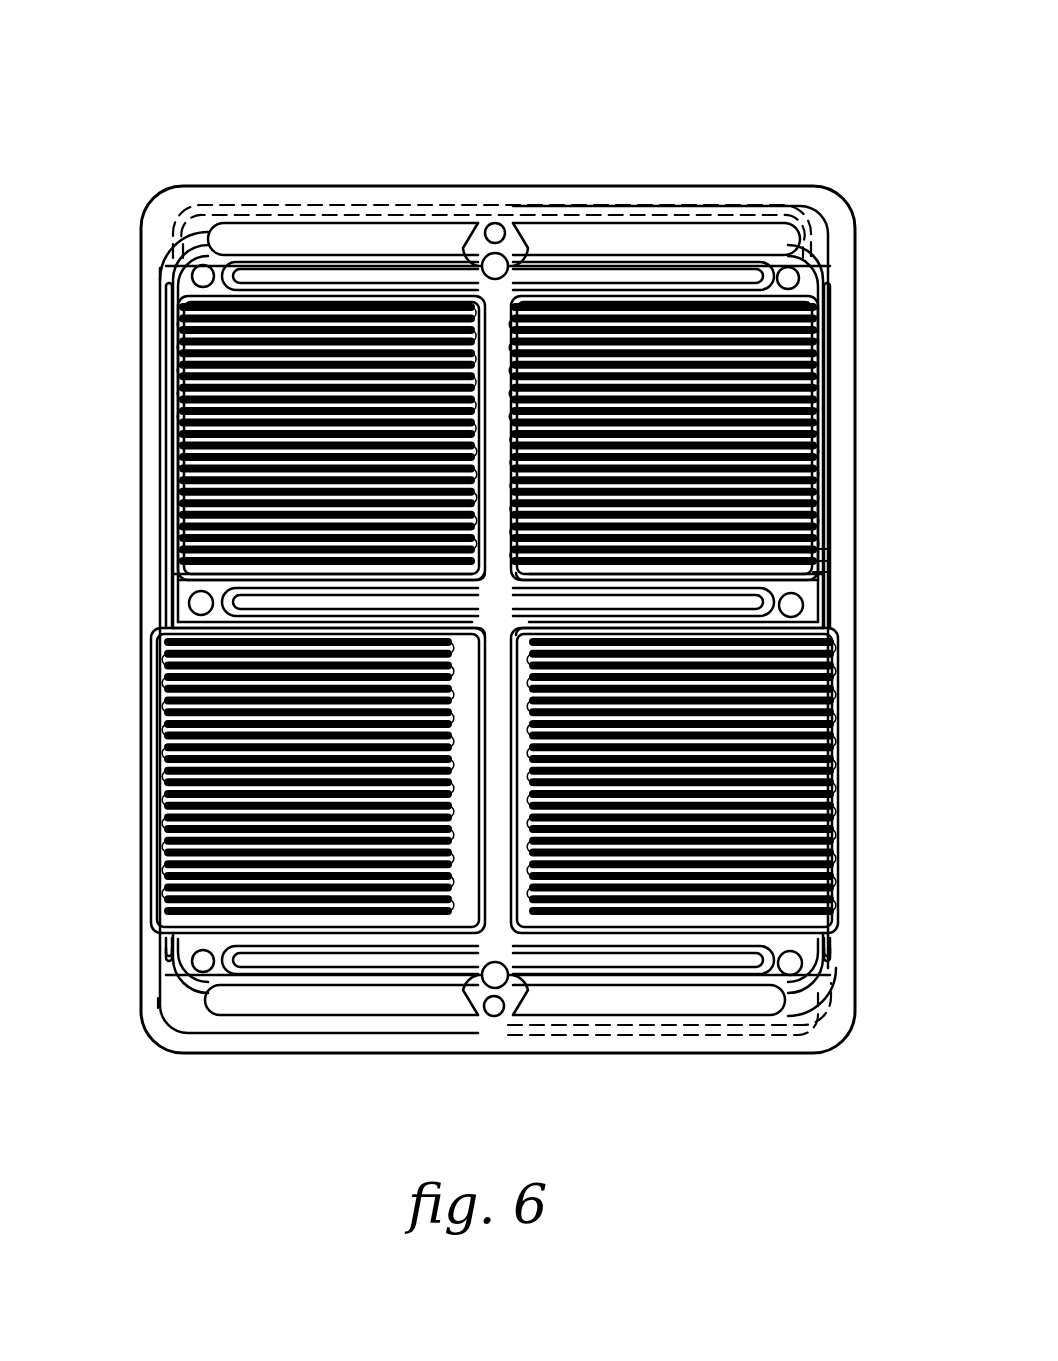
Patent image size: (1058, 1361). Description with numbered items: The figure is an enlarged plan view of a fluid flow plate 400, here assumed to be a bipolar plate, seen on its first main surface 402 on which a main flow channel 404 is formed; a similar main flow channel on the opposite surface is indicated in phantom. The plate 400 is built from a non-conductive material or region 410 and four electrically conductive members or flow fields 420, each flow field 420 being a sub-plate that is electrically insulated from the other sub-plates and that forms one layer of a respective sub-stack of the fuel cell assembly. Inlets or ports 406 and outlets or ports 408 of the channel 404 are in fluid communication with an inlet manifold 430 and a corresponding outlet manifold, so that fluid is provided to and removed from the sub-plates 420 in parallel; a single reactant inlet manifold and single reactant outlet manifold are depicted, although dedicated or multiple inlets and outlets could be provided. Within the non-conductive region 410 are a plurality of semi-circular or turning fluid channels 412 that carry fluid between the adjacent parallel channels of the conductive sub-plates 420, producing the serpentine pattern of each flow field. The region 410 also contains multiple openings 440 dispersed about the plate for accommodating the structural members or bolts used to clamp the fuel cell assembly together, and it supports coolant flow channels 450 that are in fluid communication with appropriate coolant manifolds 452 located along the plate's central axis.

The fluid flow plate 400 is at (180, 86).
The first main surface 402 is at (848, 440).
The main flow channel 404 is at (820, 322).
The inlets/ports 406 is at (160, 252).
The outlets/ports 408 is at (162, 948).
The non-conductive material or region 410 is at (812, 545).
The turning fluid channels 412 is at (812, 562).
The electrically conductive members or flow fields 420 is at (156, 465).
The manifold 430 is at (310, 237).
The openings 440 is at (197, 268).
The coolant flow channels 450 is at (413, 258).
The coolant manifolds 452 is at (475, 252).